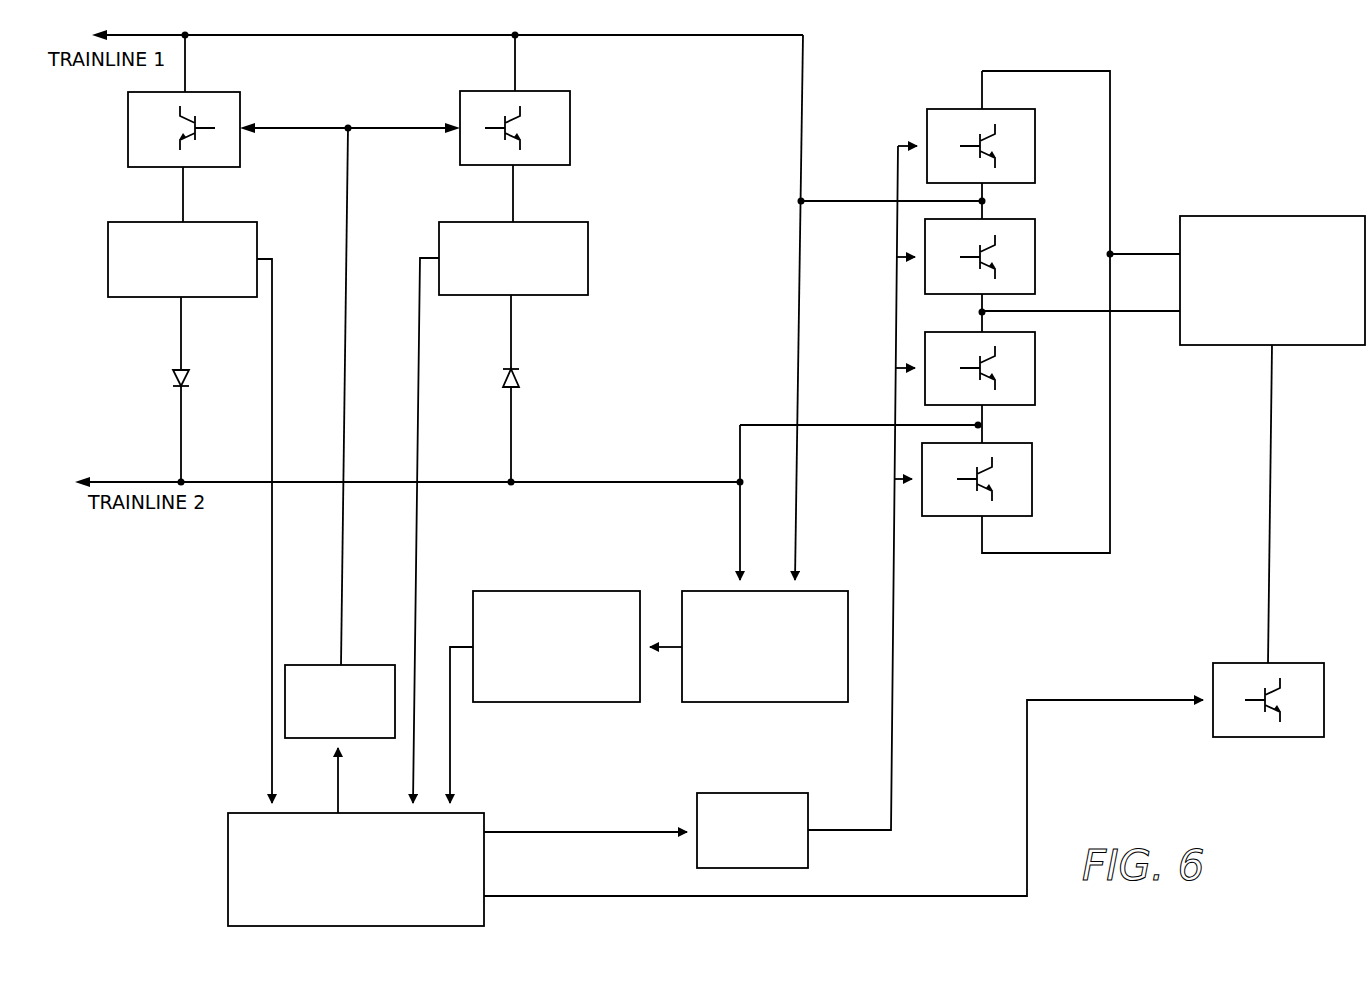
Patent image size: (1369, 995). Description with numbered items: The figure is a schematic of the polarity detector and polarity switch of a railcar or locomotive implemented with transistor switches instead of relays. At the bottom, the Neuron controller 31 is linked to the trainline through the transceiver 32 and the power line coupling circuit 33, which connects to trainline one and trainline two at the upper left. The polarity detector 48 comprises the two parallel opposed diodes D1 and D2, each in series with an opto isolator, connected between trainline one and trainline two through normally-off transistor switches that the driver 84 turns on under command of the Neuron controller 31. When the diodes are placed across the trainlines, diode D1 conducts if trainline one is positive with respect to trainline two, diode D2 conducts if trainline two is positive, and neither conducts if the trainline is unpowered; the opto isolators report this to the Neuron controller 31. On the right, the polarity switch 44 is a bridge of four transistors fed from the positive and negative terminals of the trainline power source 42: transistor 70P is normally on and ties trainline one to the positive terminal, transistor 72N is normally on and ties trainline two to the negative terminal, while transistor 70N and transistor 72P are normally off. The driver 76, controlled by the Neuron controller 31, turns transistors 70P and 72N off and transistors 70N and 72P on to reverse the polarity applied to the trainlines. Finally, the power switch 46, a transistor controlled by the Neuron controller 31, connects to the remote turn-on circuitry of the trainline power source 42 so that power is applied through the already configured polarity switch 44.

The Neuron controller 31 is at (242, 860).
The transceiver 32 is at (608, 698).
The coupling circuit 33 is at (808, 688).
The trainline power source 42 is at (1192, 333).
The polarity switch 44 is at (983, 360).
The power switch 46 is at (1276, 730).
The polarity detector 48 is at (600, 320).
The transistor 70P is at (933, 124).
The transistor 70N is at (928, 248).
The transistor 72N is at (1035, 372).
The transistor 72P is at (1032, 472).
The driver 76 is at (785, 802).
The driver 84 is at (360, 672).
The diode D1 is at (172, 380).
The diode D2 is at (500, 378).